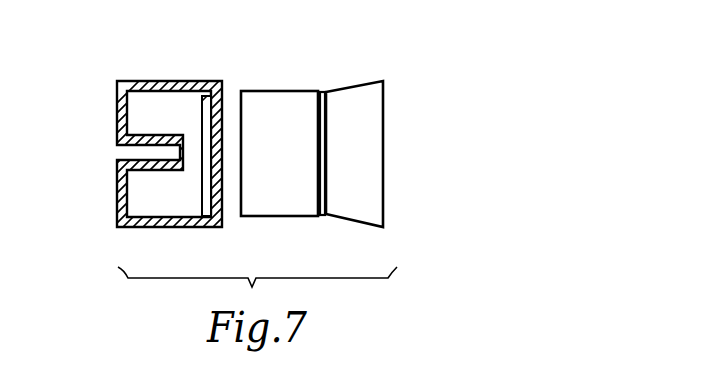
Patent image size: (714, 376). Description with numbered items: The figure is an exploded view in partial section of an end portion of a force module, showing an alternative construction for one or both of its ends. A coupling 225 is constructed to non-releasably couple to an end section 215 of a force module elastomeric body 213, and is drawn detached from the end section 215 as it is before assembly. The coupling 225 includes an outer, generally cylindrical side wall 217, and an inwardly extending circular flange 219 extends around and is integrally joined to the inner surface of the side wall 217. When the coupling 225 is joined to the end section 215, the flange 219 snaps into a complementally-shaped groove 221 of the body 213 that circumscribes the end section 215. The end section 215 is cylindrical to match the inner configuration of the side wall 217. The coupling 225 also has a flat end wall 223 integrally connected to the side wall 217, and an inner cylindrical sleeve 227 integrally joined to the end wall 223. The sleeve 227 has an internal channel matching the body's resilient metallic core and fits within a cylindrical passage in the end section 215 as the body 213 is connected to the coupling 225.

The force module elastomeric body 213 is at (365, 82).
The end section 215 is at (277, 90).
The side wall 217 is at (178, 81).
The flange 219 is at (210, 206).
The groove 221 is at (322, 216).
The end wall 223 is at (117, 183).
The coupling 225 is at (122, 228).
The sleeve 227 is at (153, 133).